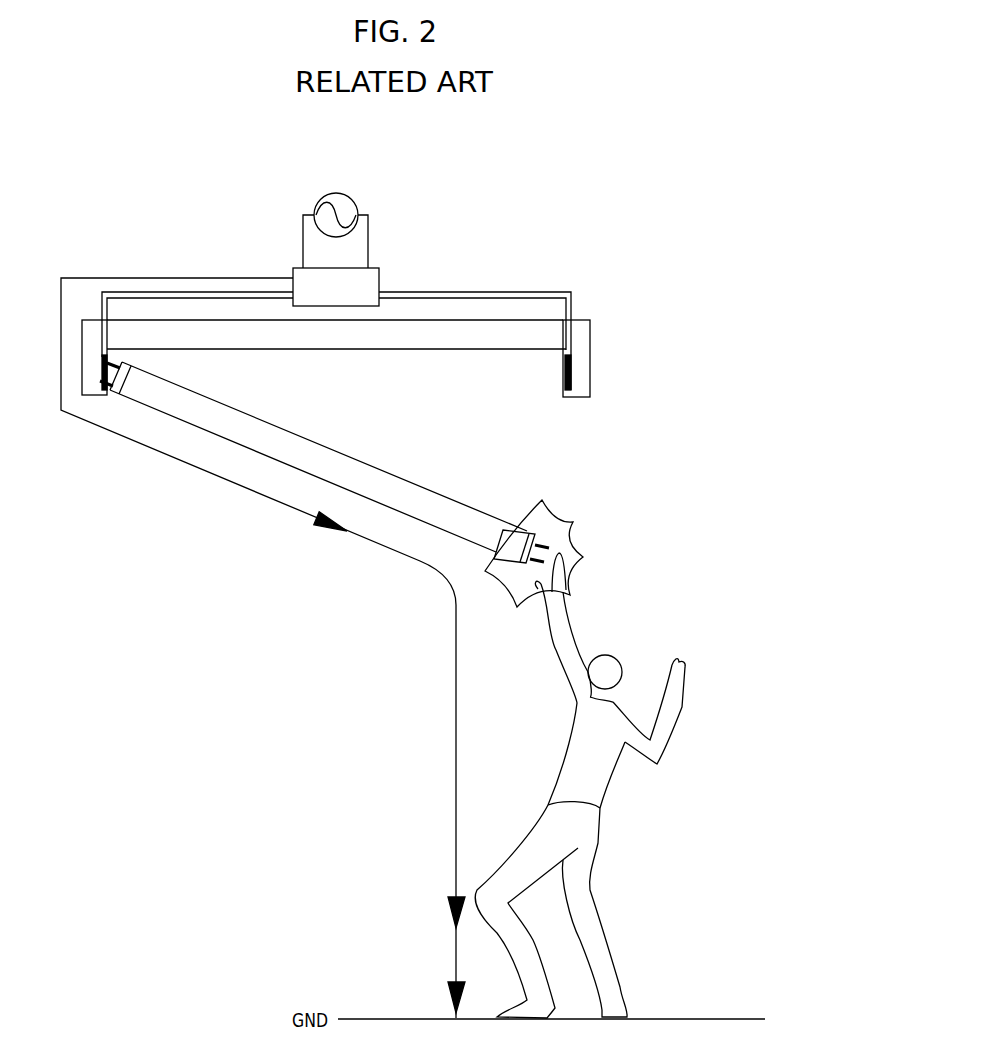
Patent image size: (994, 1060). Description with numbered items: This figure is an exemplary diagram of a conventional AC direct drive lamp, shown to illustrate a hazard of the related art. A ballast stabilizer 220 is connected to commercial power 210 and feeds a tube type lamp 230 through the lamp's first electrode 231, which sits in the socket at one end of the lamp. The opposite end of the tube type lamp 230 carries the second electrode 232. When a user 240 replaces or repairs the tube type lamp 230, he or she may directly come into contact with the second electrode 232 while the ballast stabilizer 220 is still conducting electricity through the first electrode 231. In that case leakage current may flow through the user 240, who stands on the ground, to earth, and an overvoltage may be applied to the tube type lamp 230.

The commercial power 210 is at (348, 200).
The ballast stabilizer 220 is at (367, 285).
The tube type lamp 230 is at (278, 437).
The first electrode 231 is at (108, 360).
The second electrode 232 is at (548, 540).
The user 240 is at (563, 628).